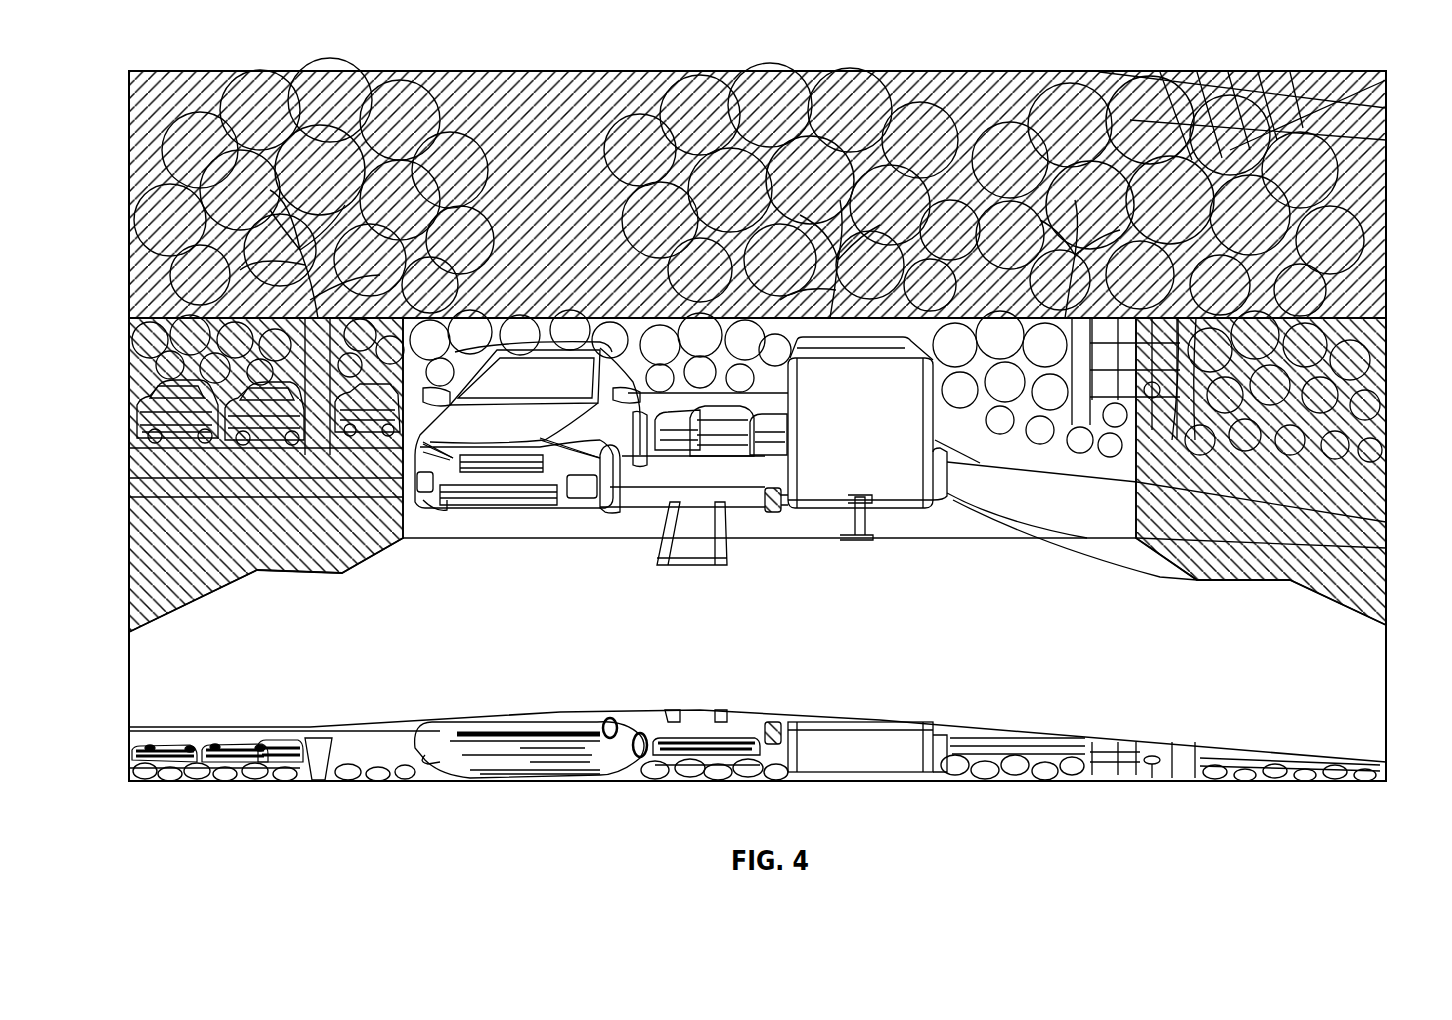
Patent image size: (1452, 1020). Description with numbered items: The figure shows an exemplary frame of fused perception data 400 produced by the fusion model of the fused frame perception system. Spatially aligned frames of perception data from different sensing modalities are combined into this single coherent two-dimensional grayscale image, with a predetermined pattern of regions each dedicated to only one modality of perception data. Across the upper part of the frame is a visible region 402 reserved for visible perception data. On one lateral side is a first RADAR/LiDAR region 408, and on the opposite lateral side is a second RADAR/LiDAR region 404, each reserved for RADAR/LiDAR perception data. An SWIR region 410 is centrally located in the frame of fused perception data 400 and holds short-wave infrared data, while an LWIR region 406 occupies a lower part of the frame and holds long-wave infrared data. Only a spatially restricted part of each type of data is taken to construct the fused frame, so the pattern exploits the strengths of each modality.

The frame of fused perception data 400 is at (1008, 790).
The visible region 402 is at (1386, 158).
The second RADAR/LiDAR region 404 is at (1386, 522).
The LWIR region 406 is at (500, 677).
The first RADAR/LiDAR region 408 is at (192, 433).
The SWIR region 410 is at (915, 512).